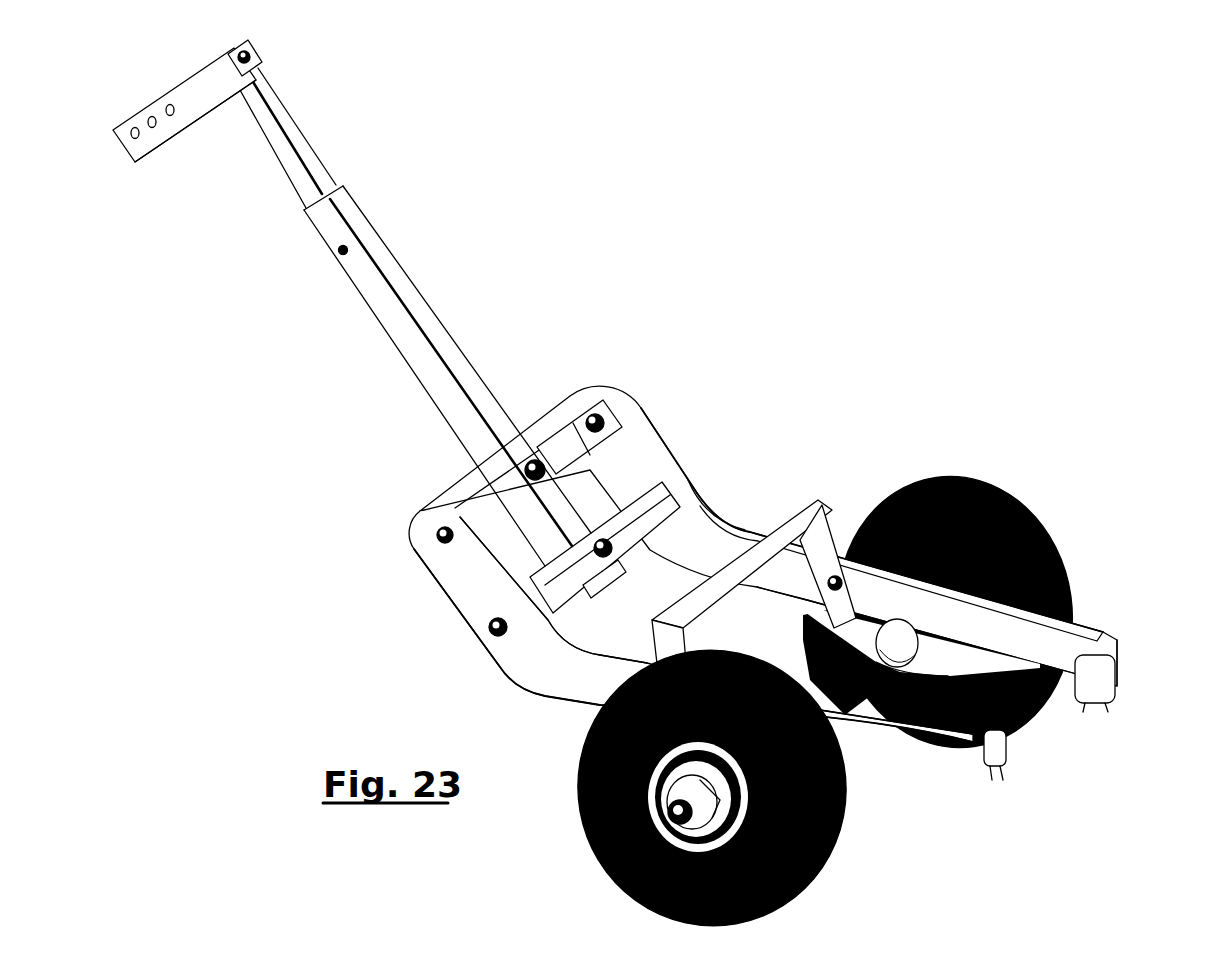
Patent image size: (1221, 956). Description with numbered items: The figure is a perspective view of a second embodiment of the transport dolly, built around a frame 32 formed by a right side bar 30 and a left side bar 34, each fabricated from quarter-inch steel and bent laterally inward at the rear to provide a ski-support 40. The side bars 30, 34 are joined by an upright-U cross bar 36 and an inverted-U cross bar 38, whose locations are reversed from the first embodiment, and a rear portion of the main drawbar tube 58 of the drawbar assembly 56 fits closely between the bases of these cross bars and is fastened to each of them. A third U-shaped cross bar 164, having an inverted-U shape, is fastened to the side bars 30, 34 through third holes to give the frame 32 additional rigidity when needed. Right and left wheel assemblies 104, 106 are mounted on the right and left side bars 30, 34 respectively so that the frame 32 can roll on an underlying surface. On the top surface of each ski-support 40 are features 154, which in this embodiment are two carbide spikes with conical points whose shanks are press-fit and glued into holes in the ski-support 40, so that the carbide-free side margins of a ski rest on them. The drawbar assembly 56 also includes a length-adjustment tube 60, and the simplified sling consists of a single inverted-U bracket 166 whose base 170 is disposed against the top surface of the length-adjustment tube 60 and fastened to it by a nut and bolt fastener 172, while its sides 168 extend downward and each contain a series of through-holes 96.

The right side bar 30 is at (720, 517).
The frame 32 is at (673, 456).
The left side bar 34 is at (522, 683).
The upright-U cross bar 36 is at (684, 482).
The inverted-U cross bar 38 is at (553, 449).
The ski-support 40 is at (1015, 740).
The drawbar assembly 56 is at (415, 272).
The main drawbar tube 58 is at (444, 321).
The length-adjustment tube 60 is at (300, 143).
The through-holes 96 is at (170, 117).
The right wheel assembly 104 is at (1015, 505).
The left wheel assembly 106 is at (850, 820).
The carbide spikes 154 is at (1108, 683).
The third U-shaped cross bar 164 is at (800, 503).
The inverted-U bracket 166 is at (197, 117).
The sides 168 is at (185, 88).
The base 170 is at (250, 70).
The nut and bolt fastener 172 is at (251, 56).